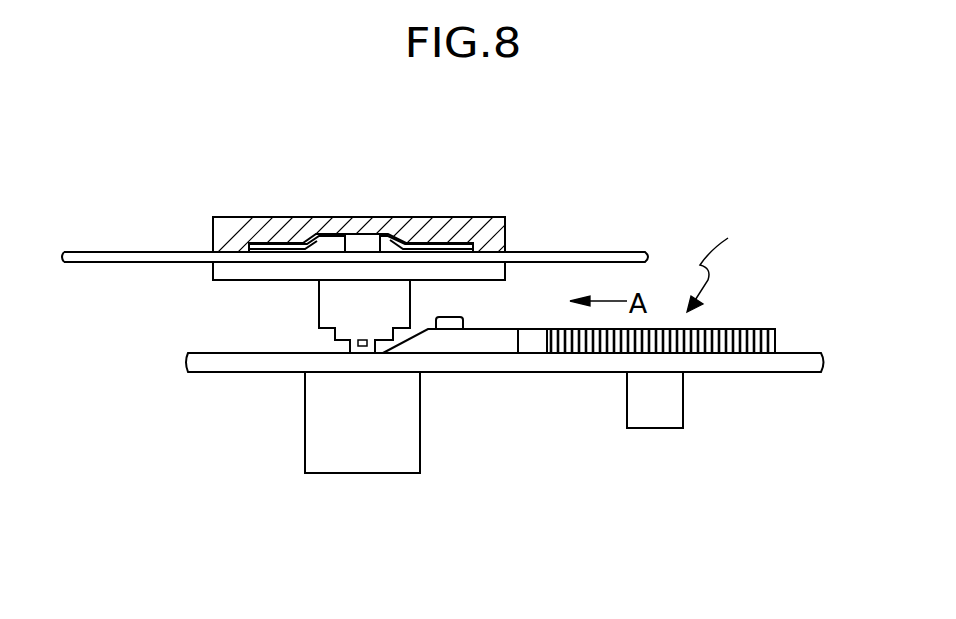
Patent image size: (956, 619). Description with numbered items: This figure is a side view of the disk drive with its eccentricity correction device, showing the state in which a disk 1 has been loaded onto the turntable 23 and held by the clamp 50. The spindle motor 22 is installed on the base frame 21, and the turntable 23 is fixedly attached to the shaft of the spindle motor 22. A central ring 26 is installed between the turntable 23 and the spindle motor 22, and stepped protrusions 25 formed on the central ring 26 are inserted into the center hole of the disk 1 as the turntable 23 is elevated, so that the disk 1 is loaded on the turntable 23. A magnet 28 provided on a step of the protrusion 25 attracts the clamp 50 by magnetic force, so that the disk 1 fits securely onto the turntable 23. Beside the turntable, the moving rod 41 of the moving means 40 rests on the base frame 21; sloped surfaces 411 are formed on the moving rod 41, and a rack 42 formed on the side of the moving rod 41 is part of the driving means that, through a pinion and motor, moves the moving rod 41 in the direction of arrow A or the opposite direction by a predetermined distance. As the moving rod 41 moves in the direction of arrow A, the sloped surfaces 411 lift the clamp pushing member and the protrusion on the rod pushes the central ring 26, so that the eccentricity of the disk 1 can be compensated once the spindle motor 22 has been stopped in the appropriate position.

The disk 1 is at (648, 253).
The base frame 21 is at (553, 363).
The spindle motor 22 is at (347, 462).
The turntable 23 is at (217, 273).
The protrusions 25 is at (318, 242).
The central ring 26 is at (330, 308).
The magnet 28 is at (378, 232).
The moving means 40 is at (719, 261).
The moving rod 41 is at (500, 347).
The rack 42 is at (753, 328).
The clamp 50 is at (477, 225).
The sloped surfaces 411 is at (385, 352).